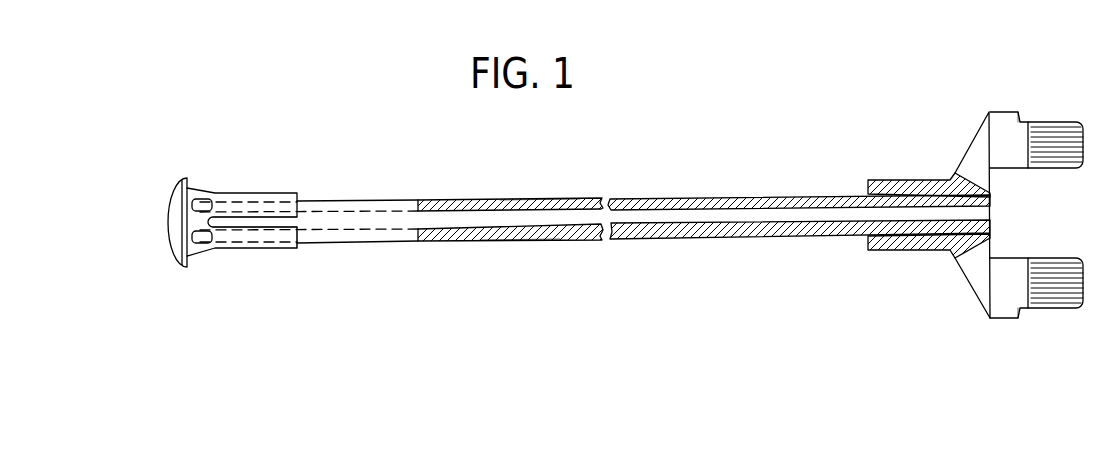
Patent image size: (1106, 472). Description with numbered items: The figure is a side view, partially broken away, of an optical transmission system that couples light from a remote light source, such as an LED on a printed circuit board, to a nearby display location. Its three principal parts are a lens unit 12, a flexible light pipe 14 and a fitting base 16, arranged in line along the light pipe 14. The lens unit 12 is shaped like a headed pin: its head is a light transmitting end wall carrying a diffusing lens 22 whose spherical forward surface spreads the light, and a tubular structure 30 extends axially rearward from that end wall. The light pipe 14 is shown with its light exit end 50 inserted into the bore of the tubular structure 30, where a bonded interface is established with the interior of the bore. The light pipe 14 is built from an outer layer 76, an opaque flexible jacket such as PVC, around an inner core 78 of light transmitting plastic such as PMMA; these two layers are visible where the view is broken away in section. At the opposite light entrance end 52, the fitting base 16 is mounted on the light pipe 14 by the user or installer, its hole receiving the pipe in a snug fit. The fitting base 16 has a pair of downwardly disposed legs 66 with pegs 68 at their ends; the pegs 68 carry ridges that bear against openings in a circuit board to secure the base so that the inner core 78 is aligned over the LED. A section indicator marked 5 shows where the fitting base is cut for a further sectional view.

The lens unit 12 is at (233, 192).
The flexible light pipe 14 is at (372, 201).
The fitting base 16 is at (964, 147).
The diffusing lens 22 is at (167, 230).
The tubular structure 30 is at (238, 249).
The light exit end 50 is at (299, 243).
The light entrance end 52 is at (872, 200).
The legs 66 is at (1005, 113).
The pegs 68 is at (1058, 123).
The outer layer 76 is at (533, 243).
The inner core 78 is at (549, 207).
The section line 5- 5 is at (908, 258).